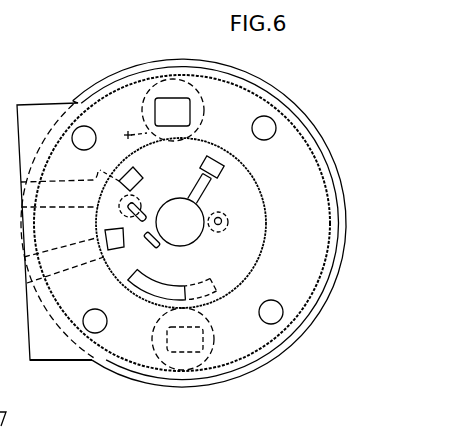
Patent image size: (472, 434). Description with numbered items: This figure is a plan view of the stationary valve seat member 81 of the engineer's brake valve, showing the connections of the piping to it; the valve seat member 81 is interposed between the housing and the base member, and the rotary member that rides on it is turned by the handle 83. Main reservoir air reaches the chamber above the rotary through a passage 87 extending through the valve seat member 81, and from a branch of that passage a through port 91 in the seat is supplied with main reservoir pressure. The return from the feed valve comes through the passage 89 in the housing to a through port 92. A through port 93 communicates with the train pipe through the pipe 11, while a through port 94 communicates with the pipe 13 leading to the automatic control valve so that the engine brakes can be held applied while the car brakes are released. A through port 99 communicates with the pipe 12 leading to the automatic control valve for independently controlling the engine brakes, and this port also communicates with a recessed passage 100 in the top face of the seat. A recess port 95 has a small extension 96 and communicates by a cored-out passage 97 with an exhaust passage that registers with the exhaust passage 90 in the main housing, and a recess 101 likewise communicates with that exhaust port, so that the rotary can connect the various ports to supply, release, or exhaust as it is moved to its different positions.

The pipe 11 is at (208, 340).
The pipe 12 is at (140, 197).
The pipe 13 is at (224, 214).
The stationary valve seat member 81 is at (252, 253).
The handle 83 is at (134, 130).
The passage 87 is at (173, 110).
The passage 89 is at (69, 250).
The exhaust passage 90 is at (180, 222).
The through port 91 is at (140, 173).
The through port 92 is at (118, 248).
The through port 93 is at (175, 283).
The through port 94 is at (218, 226).
The recess port 95 is at (203, 161).
The small extension 96 is at (226, 168).
The cored-out passage 97 is at (205, 187).
The through port 99 is at (125, 207).
The recessed passage 100 is at (144, 239).
The recess 101 is at (153, 246).